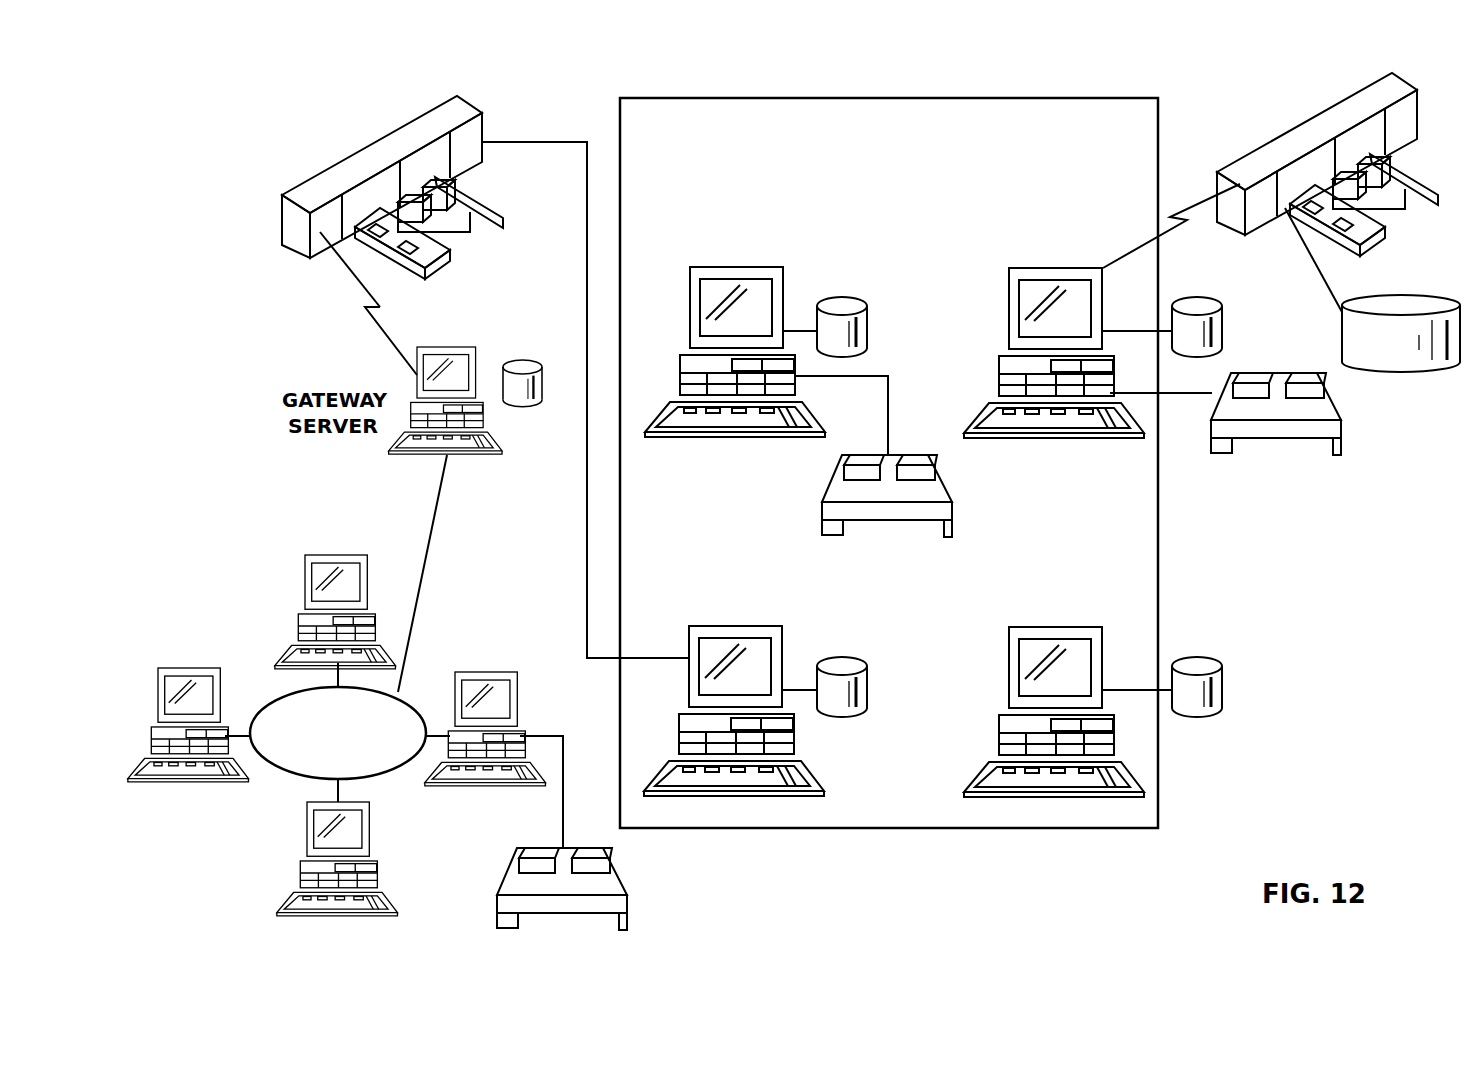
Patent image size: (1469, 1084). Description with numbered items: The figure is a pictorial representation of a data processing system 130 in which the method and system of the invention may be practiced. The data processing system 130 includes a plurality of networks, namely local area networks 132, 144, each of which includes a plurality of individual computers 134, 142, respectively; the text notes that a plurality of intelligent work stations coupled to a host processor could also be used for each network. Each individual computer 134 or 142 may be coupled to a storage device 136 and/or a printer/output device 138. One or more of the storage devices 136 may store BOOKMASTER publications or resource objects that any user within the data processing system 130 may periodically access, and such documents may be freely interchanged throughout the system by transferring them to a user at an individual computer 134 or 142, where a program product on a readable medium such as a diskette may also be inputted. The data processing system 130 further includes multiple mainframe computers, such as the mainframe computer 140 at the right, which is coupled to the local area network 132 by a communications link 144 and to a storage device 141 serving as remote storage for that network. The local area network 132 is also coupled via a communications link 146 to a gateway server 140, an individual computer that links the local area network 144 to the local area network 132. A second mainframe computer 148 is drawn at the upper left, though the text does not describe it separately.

The data processing system 130 is at (610, 102).
The local area network 132 is at (772, 174).
The individual computer 134 is at (706, 266).
The storage device 136 is at (867, 331).
The printer/output device 138 is at (938, 486).
The mainframe computer 140 is at (455, 346).
The storage device 141 is at (1397, 350).
The individual computer 142 is at (305, 583).
The local area network 144 is at (290, 783).
The communications link 146 is at (385, 340).
The mainframe computer 148 is at (356, 152).